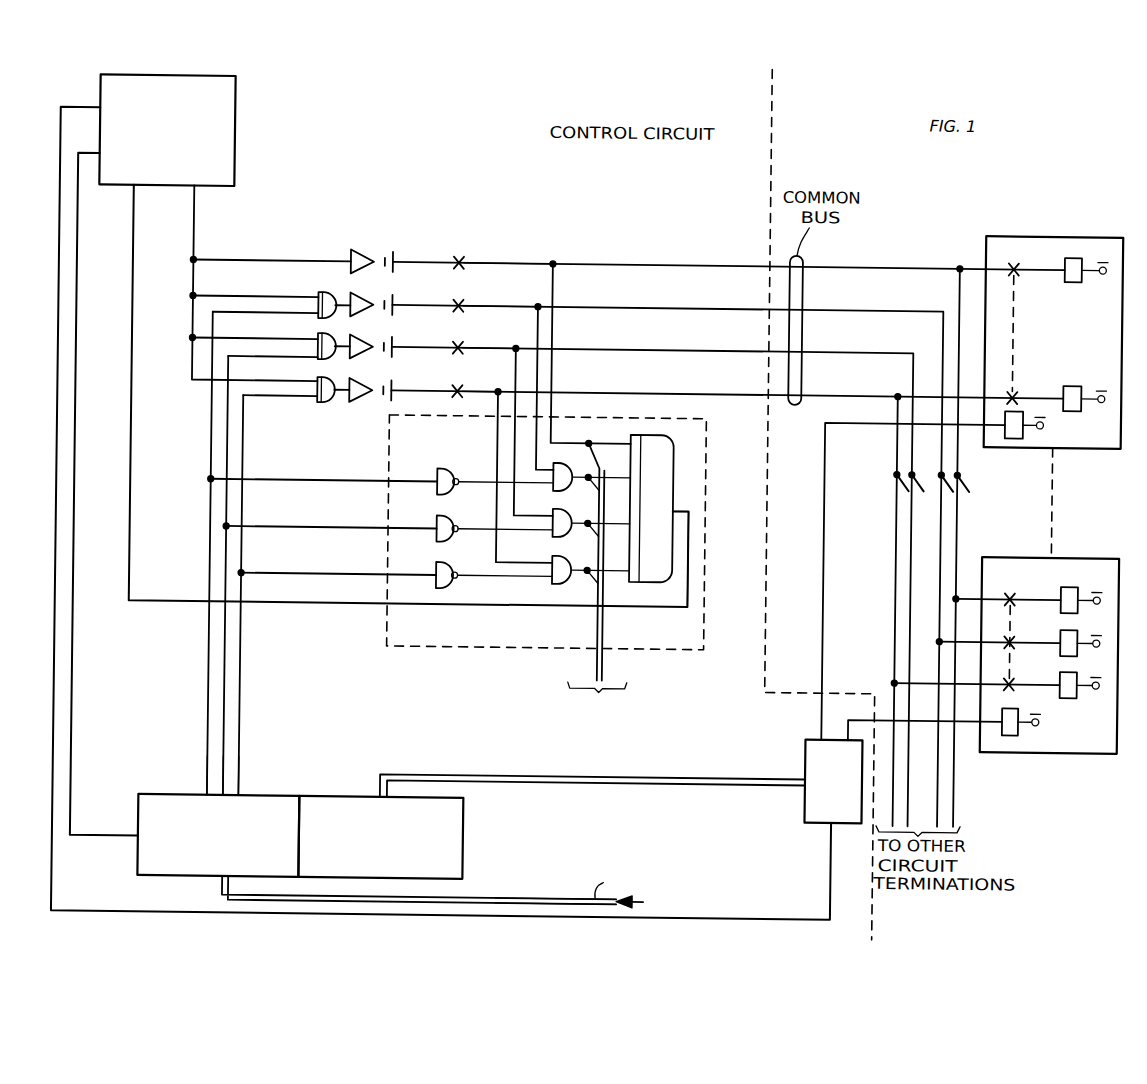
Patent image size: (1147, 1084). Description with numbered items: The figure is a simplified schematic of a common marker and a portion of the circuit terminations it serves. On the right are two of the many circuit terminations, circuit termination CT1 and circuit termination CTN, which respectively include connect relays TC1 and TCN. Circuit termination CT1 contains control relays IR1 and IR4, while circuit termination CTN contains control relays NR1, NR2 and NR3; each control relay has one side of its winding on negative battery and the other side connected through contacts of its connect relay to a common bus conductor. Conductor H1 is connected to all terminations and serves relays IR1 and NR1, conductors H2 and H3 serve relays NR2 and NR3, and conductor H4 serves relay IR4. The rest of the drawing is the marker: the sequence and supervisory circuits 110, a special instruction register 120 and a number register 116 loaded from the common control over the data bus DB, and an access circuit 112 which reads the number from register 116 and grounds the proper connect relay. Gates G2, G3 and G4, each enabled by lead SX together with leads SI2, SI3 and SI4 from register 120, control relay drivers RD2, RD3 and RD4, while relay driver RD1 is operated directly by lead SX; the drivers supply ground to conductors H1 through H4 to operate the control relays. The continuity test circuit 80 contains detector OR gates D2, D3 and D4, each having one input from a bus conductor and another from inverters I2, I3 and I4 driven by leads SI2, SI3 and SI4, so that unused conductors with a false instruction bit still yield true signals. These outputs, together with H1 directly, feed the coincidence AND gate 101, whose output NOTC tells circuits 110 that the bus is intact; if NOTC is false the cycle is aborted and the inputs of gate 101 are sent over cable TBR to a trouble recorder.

The sequence and supervisory circuits 110 is at (167, 130).
The coincidence AND gate 101 is at (648, 434).
The continuity test circuit 80 is at (518, 646).
The special instruction register 120 is at (218, 835).
The number register 116 is at (380, 837).
The access circuit 112 is at (833, 782).
The lead SX is at (190, 226).
The gate G2 is at (316, 298).
The gate G3 is at (316, 340).
The gate G4 is at (316, 382).
The relay driver RD1 is at (454, 260).
The relay driver RD2 is at (454, 303).
The relay driver RD3 is at (454, 346).
The relay driver RD4 is at (454, 388).
The conductor H1 is at (497, 264).
The conductor H2 is at (497, 307).
The conductor H3 is at (488, 349).
The conductor H4 is at (488, 392).
The inverter I2 is at (437, 473).
The inverter I3 is at (437, 520).
The inverter I4 is at (437, 566).
The detector OR gate D2 is at (553, 489).
The detector OR gate D3 is at (553, 535).
The detector OR gate D4 is at (553, 582).
The output signal NOTC is at (689, 546).
The cable TBR is at (604, 648).
The lead SI2 is at (210, 766).
The lead SI3 is at (226, 789).
The lead SI4 is at (242, 772).
The data bus DB is at (572, 898).
The circuit termination CT1 is at (1058, 231).
The circuit termination CTN is at (1057, 553).
The relay 1R1 IR1 is at (1067, 262).
The relay 1R4 IR4 is at (1067, 389).
The connect relay TC1 is at (1020, 425).
The relay NR1 is at (1067, 592).
The relay NR2 is at (1067, 635).
The relay NR3 is at (1067, 677).
The connect relay TCN is at (1020, 721).